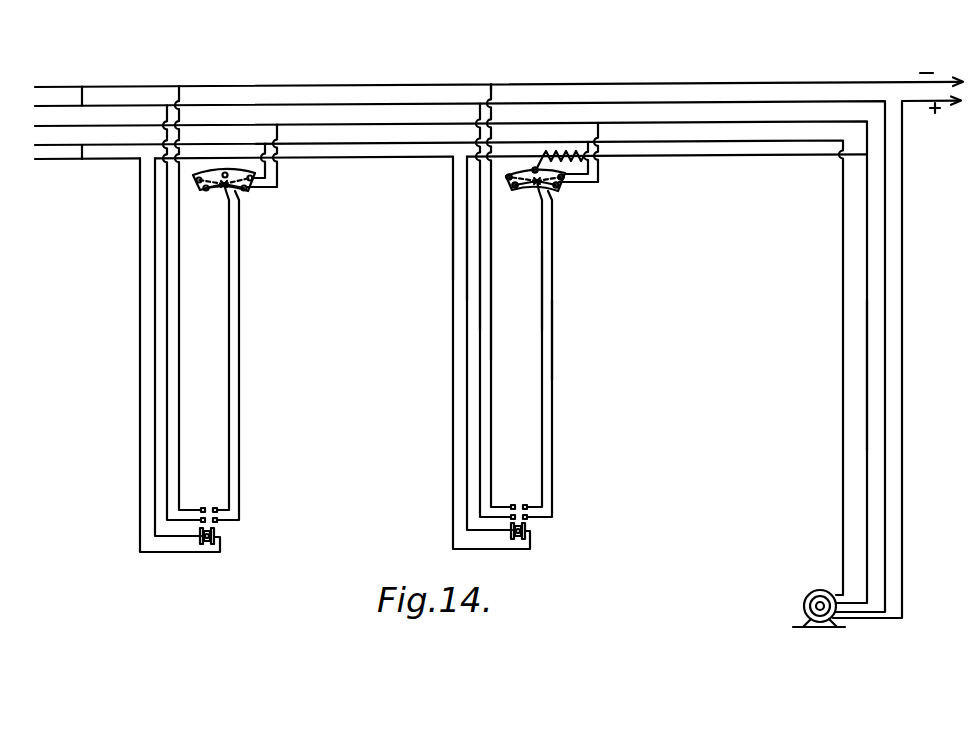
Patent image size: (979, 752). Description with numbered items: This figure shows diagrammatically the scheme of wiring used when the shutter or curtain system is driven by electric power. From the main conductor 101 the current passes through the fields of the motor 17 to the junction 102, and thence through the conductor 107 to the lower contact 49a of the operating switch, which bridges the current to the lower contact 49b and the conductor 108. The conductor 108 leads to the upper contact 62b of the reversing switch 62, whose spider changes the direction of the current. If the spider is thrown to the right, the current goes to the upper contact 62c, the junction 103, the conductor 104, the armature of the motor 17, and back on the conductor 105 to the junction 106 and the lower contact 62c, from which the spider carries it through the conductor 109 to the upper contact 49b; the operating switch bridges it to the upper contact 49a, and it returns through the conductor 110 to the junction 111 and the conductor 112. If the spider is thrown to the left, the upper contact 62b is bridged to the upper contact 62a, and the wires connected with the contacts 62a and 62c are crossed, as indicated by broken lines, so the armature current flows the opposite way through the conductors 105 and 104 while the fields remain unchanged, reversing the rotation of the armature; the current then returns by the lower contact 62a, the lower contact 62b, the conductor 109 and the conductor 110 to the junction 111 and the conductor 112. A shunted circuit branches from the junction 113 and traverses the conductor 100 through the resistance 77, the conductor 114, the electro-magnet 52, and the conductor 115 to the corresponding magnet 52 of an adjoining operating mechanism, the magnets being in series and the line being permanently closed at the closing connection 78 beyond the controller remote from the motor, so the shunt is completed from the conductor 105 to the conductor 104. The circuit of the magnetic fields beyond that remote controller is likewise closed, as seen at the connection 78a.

The motor 17 is at (811, 601).
The contact 49a is at (511, 517).
The contact 49b is at (216, 518).
The electro-magnet 52 is at (209, 545).
The reversing switch 62 is at (553, 189).
The contact 62a is at (515, 187).
The contact 62b is at (537, 168).
The contact 62c is at (558, 187).
The resistance 77 is at (583, 162).
The closing connection 78 is at (82, 160).
The closing connection 78a is at (85, 93).
The conductor 100 is at (798, 156).
The main conductor 101 is at (945, 103).
The junction 102 is at (477, 103).
The junction 103 is at (588, 141).
The conductor 104 is at (843, 332).
The conductor 105 is at (867, 388).
The junction 106 is at (600, 122).
The conductor 107 is at (480, 298).
The conductor 108 is at (555, 304).
The conductor 109 is at (553, 356).
The conductor 110 is at (491, 328).
The junction 111 is at (490, 84).
The conductor 112 is at (943, 78).
The junction 113 is at (867, 154).
The conductor 114 is at (467, 268).
The conductor 115 is at (448, 236).